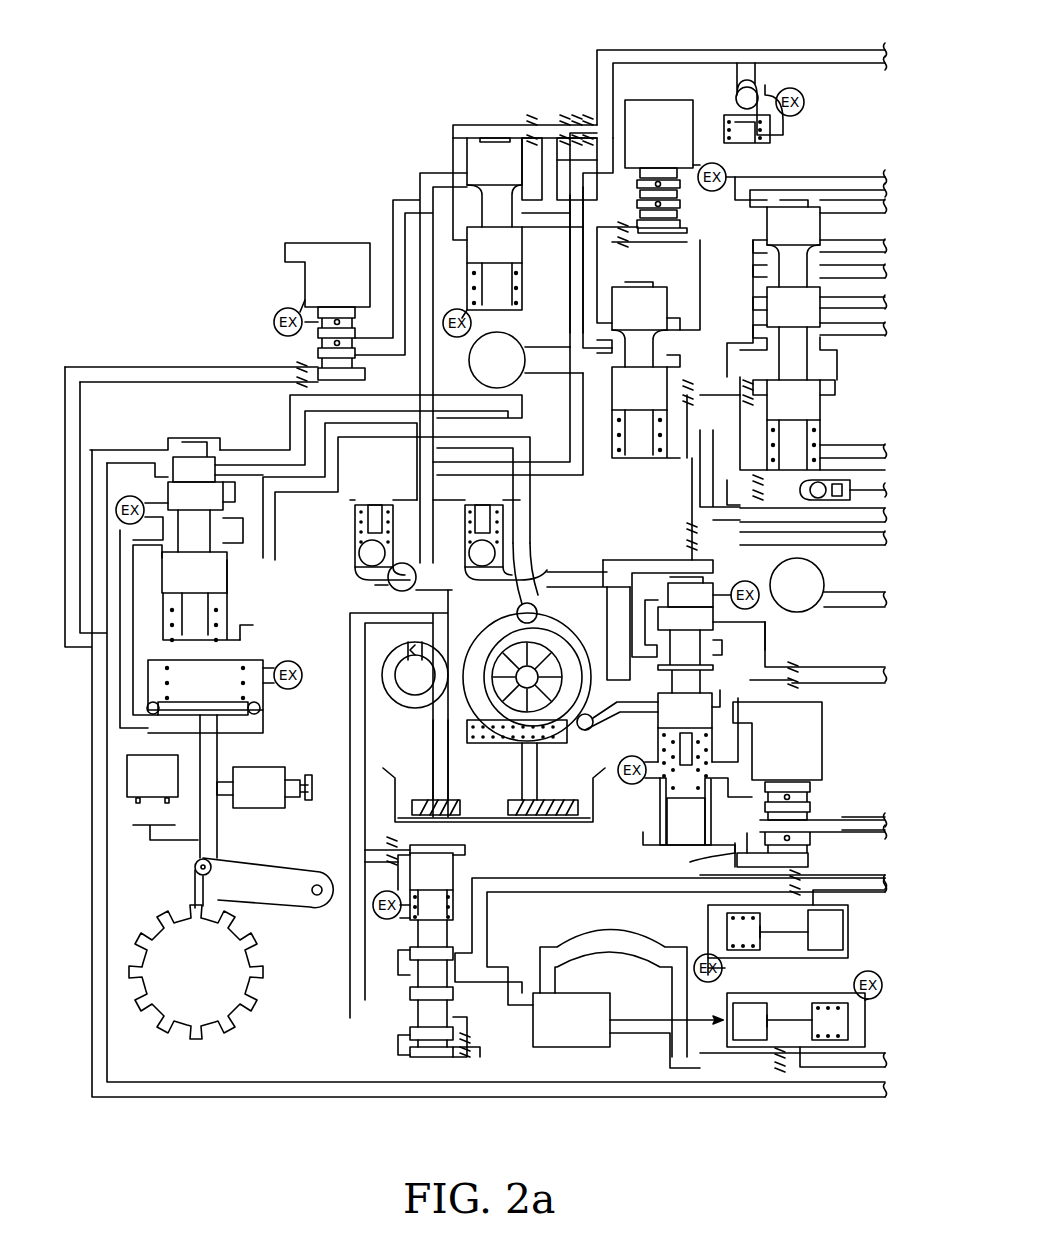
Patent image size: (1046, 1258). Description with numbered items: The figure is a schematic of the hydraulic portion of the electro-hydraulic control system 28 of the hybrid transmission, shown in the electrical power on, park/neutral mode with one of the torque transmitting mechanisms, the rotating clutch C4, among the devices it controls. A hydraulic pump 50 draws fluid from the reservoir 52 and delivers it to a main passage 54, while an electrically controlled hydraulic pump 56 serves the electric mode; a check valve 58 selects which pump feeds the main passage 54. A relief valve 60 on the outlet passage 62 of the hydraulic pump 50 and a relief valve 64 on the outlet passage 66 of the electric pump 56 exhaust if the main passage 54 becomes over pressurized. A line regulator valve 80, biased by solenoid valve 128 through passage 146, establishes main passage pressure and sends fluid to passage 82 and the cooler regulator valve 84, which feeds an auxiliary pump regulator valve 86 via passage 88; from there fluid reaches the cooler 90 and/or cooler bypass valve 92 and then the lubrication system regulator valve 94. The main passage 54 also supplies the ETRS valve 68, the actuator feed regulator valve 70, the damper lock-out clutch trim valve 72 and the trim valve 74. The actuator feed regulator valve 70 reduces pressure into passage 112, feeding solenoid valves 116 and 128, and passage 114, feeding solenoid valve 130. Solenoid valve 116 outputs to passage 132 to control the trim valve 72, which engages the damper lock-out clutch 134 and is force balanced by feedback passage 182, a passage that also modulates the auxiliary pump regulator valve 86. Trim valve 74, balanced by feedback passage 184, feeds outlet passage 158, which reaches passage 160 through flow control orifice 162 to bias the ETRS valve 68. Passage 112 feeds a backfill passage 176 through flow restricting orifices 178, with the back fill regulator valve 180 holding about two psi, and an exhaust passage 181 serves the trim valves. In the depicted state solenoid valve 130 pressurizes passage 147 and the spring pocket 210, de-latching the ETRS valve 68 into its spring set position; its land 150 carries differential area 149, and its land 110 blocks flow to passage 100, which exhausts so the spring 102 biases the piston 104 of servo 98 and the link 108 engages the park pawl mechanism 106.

The electro-hydraulic control system 28 is at (412, 87).
The hydraulic pump 50 is at (570, 630).
The reservoir 52 is at (500, 827).
The main passage 54 is at (433, 500).
The electrically controlled hydraulic pump 56 is at (417, 710).
The check valve 58 is at (452, 593).
The relief valve 60 is at (507, 573).
The outlet passage 62 is at (547, 570).
The relief valve 64 is at (383, 560).
The outlet passage 66 is at (382, 657).
The electronic transmission range selection (ETRS) valve 68 is at (182, 420).
The actuator feed regulator valve 70 is at (493, 107).
The damper lock-out clutch trim valve 72 is at (682, 267).
The trim valve 74 is at (742, 267).
The line regulator valve 80 is at (720, 573).
The passage 82 is at (768, 653).
The cooler regulator valve 84 is at (797, 963).
The auxiliary pump regulator valve 86 is at (478, 1062).
The passage 88 is at (568, 875).
The cooler 90 is at (613, 994).
The cooler bypass valve 92 is at (616, 1030).
The lubrication system regulator valve 94 is at (683, 1018).
The servo 98 is at (257, 648).
The passage 100 is at (118, 680).
The spring 102 is at (247, 697).
The piston 104 is at (238, 710).
The park pawl mechanism 106 is at (267, 933).
The link 108 is at (208, 817).
The land 110 is at (201, 597).
The passage 112 is at (557, 160).
The passage 114 is at (393, 213).
The solenoid valve 116 is at (680, 166).
The solenoid valve 128 is at (809, 784).
The solenoid valve 130 is at (322, 311).
The passage 132 is at (613, 272).
The damper lock-out clutch 134 is at (526, 360).
The passage 146 is at (690, 863).
The passage 147 is at (192, 367).
The differential area 149 is at (217, 478).
The land 150 is at (169, 517).
The outlet passage 158 is at (742, 347).
The passage 160 is at (465, 395).
The flow control orifice 162 is at (692, 527).
The backfill passage 176 is at (570, 267).
The flow restricting orifices 178 is at (577, 118).
The back fill regulator valve 180 is at (760, 97).
The exhaust passage 181 is at (843, 443).
The feedback passage 182 is at (570, 378).
The feedback passage 184 is at (787, 498).
The spring pocket 210 is at (222, 632).
The torque transmitting mechanism C4 is at (828, 585).